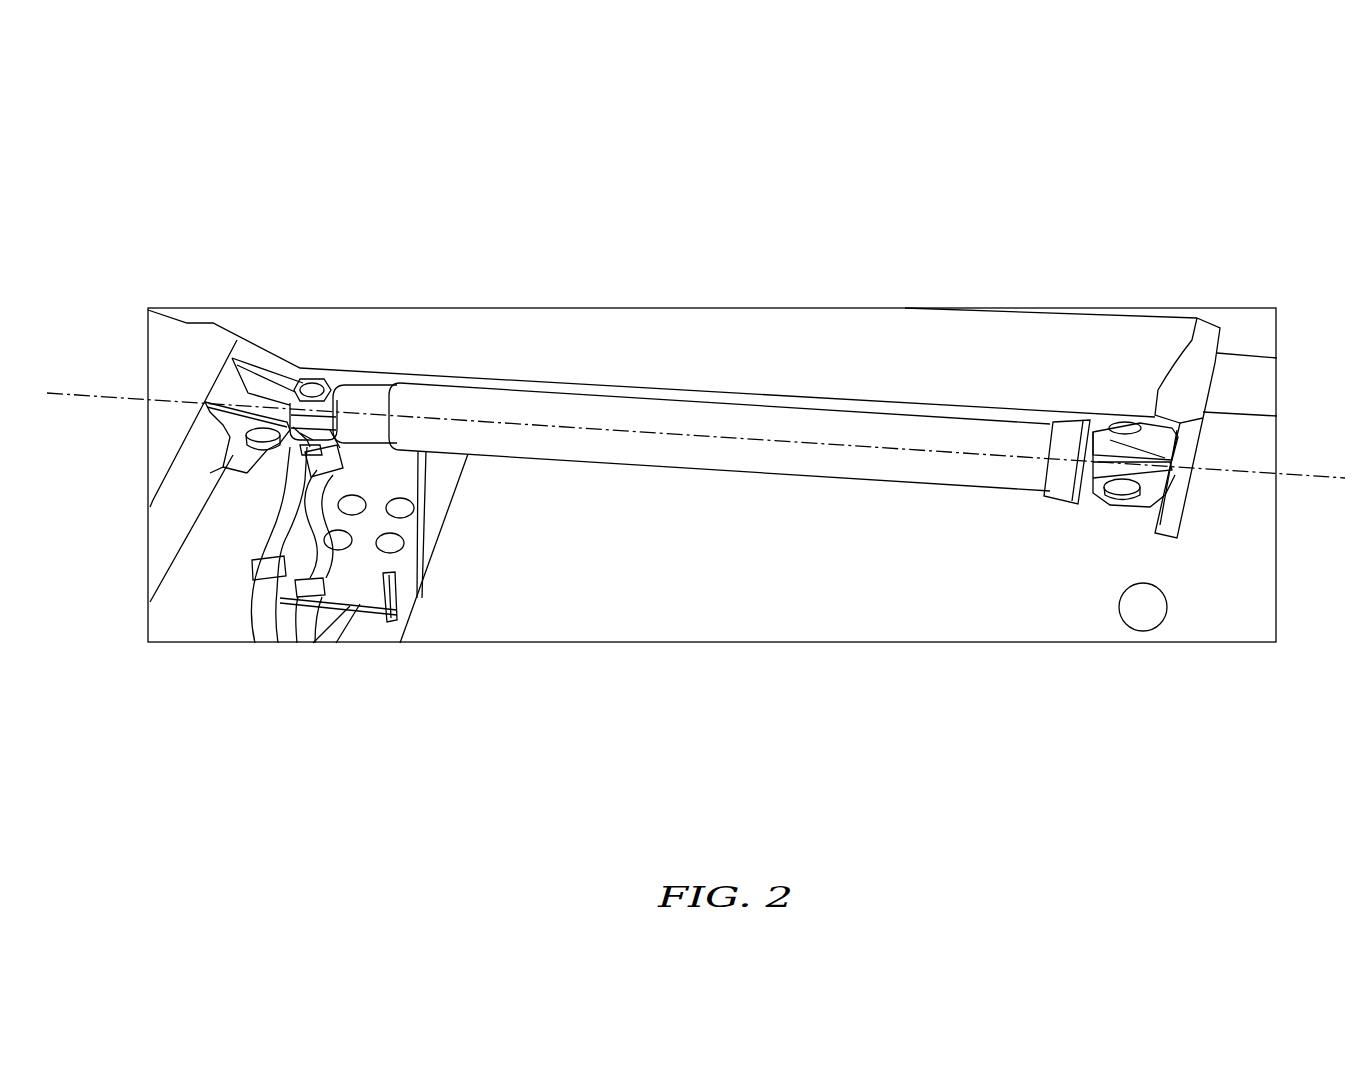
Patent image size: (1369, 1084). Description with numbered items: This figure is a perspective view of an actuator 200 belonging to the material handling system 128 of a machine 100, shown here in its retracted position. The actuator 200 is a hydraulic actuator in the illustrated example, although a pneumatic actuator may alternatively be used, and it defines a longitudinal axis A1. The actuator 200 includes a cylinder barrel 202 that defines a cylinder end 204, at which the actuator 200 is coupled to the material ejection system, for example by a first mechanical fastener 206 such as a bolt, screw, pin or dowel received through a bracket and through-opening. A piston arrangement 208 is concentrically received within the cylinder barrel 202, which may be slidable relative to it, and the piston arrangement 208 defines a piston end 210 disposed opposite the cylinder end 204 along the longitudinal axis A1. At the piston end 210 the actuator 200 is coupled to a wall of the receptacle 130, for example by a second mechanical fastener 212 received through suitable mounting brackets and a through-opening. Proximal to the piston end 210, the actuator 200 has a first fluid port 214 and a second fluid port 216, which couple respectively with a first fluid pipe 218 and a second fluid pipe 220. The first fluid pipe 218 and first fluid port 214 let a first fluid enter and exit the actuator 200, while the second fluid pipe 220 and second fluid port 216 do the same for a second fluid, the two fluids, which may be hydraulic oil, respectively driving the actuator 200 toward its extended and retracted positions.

The vehicle system 100 is at (1093, 140).
The material handling system 128 is at (1228, 338).
The receptacle 130 is at (165, 378).
The actuator 200 is at (575, 472).
The cylinder barrel 202 is at (765, 423).
The cylinder end 204 is at (1152, 438).
The first mechanical fastener 206 is at (1122, 495).
The piston arrangement 208 is at (315, 372).
The piston end 210 is at (238, 394).
The second mechanical fastener 212 is at (260, 445).
The first fluid port 214 is at (336, 435).
The second fluid port 216 is at (300, 382).
The first fluid pipe 218 is at (305, 645).
The second fluid pipe 220 is at (273, 645).
The longitudinal axis A1 is at (1298, 470).